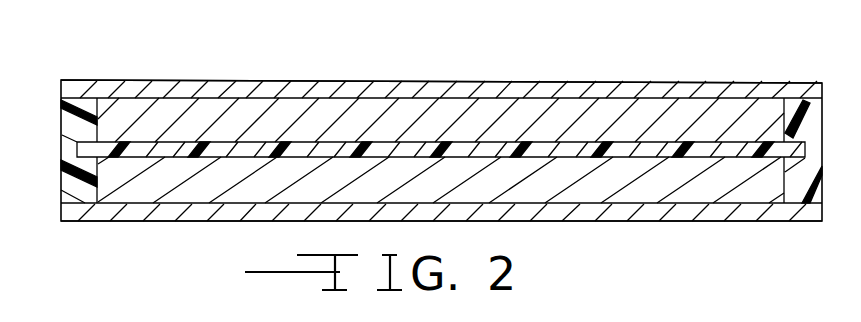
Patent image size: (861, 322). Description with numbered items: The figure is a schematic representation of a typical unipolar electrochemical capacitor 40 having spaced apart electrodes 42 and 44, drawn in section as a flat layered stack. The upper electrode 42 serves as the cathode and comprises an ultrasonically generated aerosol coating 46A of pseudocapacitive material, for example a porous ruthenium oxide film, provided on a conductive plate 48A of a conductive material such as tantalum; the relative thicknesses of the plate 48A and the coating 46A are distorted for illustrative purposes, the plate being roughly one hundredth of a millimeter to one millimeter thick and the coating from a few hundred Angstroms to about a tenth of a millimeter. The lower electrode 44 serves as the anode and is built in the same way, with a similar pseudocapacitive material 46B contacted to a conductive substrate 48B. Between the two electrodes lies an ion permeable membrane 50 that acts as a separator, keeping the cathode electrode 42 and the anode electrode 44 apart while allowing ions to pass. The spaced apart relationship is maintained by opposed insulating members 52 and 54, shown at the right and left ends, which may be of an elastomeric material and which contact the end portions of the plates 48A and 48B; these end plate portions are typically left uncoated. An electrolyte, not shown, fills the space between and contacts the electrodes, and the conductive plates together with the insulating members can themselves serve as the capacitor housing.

The unipolar electrochemical capacitor 40 is at (616, 66).
The cathode electrode 42 is at (123, 70).
The anode electrode 44 is at (603, 232).
The aerosol coating of pseudocapacitive material 46A is at (200, 115).
The pseudocapacitive material 46B is at (155, 182).
The conductive plate 48A is at (316, 93).
The conductive substrate 48B is at (733, 212).
The ion permeable membrane 50 is at (418, 150).
The insulating member 52 is at (808, 122).
The insulating member 54 is at (72, 183).